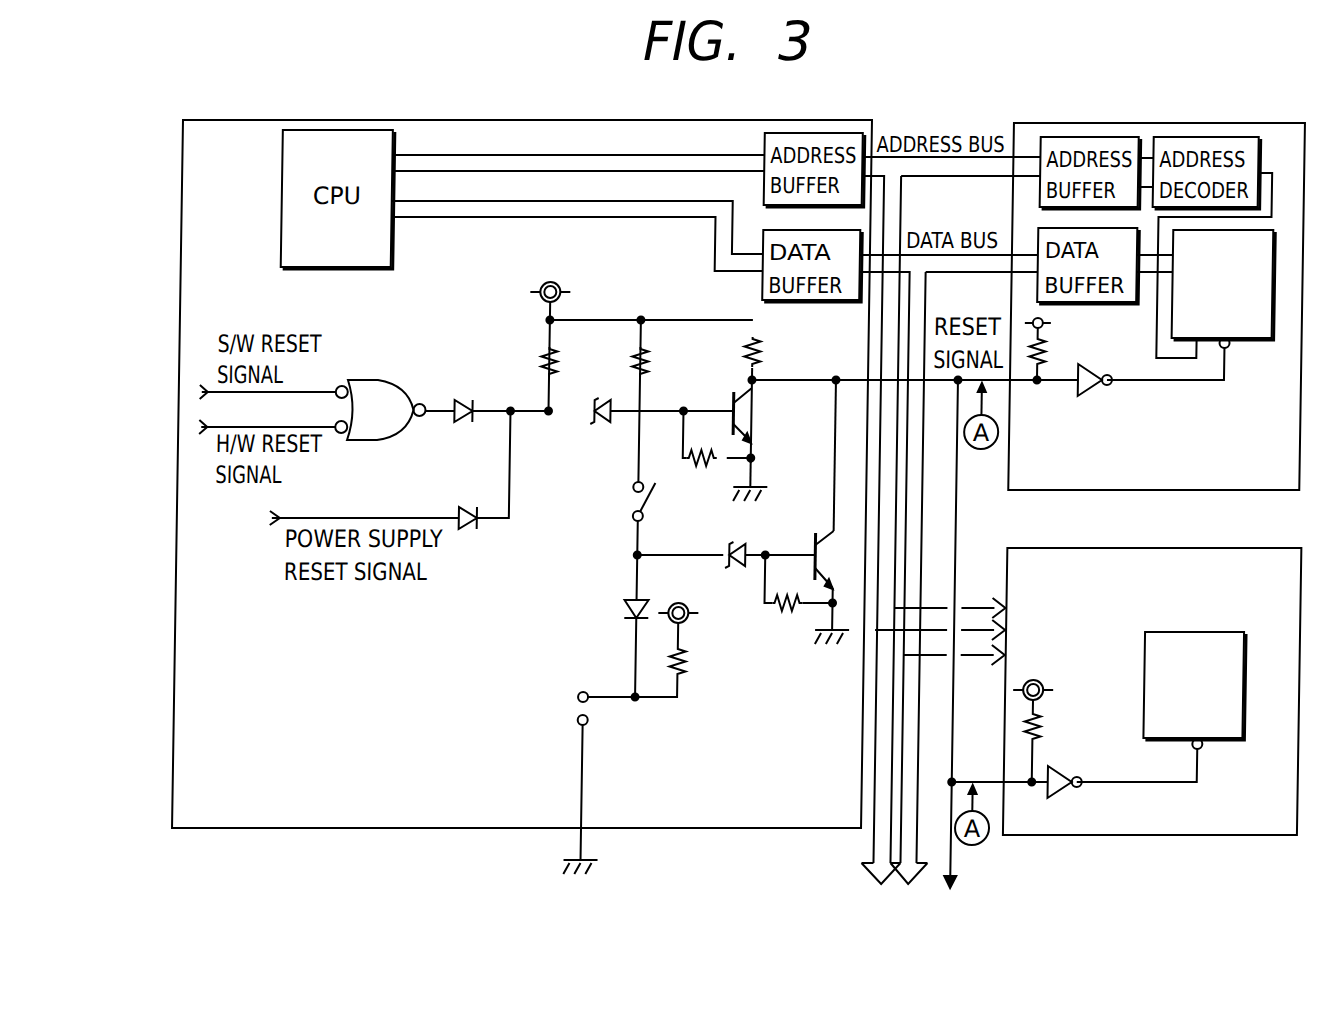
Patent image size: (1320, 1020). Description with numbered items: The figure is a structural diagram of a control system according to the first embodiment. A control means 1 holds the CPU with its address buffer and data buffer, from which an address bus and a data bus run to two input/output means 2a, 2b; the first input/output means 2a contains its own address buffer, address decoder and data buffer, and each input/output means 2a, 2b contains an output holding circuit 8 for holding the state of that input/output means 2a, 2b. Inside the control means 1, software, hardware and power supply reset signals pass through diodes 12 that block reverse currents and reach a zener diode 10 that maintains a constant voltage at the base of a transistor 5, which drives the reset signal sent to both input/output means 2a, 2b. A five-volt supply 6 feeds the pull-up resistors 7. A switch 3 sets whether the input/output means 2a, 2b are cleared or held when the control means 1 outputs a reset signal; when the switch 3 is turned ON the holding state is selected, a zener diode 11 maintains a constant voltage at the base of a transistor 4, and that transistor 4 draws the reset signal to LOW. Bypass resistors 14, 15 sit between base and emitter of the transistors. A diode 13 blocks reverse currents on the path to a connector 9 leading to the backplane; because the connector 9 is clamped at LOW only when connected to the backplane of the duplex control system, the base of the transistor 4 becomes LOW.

The control means 1 is at (859, 120).
The input/output means 2a is at (1280, 123).
The input/output means 2b is at (1278, 548).
The switch 3 is at (639, 495).
The transistor 4 is at (834, 553).
The transistor 5 is at (750, 410).
The 5V supply 6 is at (558, 284).
The pull-up resistor 7 is at (539, 352).
The output holding circuit 8 is at (1175, 328).
The connector 9 is at (585, 710).
The zener diode 10 is at (614, 397).
The zener diode 11 is at (751, 542).
The diode 12 is at (475, 397).
The diode 13 is at (636, 598).
The bypass resistor 14 is at (698, 481).
The bypass resistor 15 is at (786, 612).